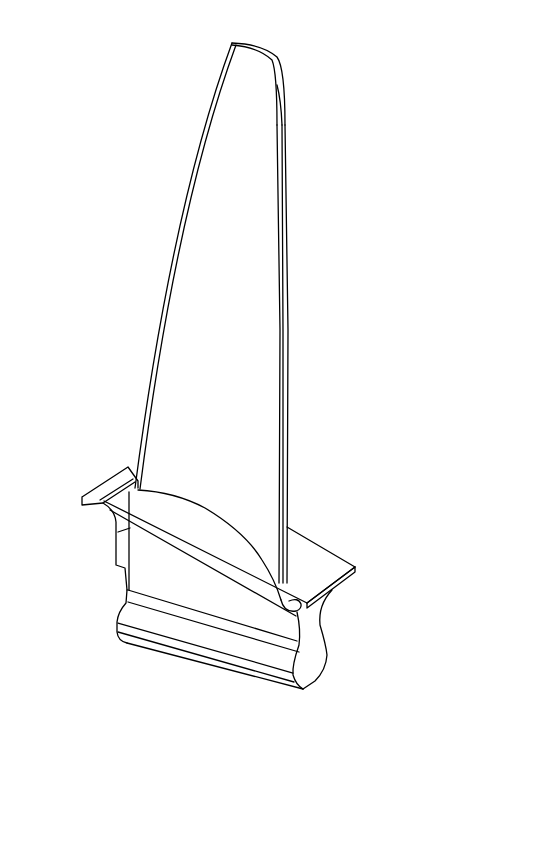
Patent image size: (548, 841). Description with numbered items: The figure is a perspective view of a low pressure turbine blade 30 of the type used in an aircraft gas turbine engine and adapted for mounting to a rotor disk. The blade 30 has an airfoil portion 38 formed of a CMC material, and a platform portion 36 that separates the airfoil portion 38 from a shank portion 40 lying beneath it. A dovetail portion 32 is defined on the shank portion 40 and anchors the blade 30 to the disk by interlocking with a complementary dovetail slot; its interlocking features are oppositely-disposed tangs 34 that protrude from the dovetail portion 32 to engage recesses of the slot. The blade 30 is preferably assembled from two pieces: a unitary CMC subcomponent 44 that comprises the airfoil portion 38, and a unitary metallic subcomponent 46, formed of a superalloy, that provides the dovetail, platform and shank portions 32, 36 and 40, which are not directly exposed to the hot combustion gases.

The low pressure turbine blade 30 is at (140, 133).
The dovetail portion 32 is at (332, 710).
The tangs 34 is at (200, 635).
The platform portion 36 is at (310, 550).
The airfoil portion 38 is at (286, 201).
The shank portion 40 is at (123, 580).
The CMC subcomponent 44 is at (322, 305).
The metallic subcomponent 46 is at (412, 545).